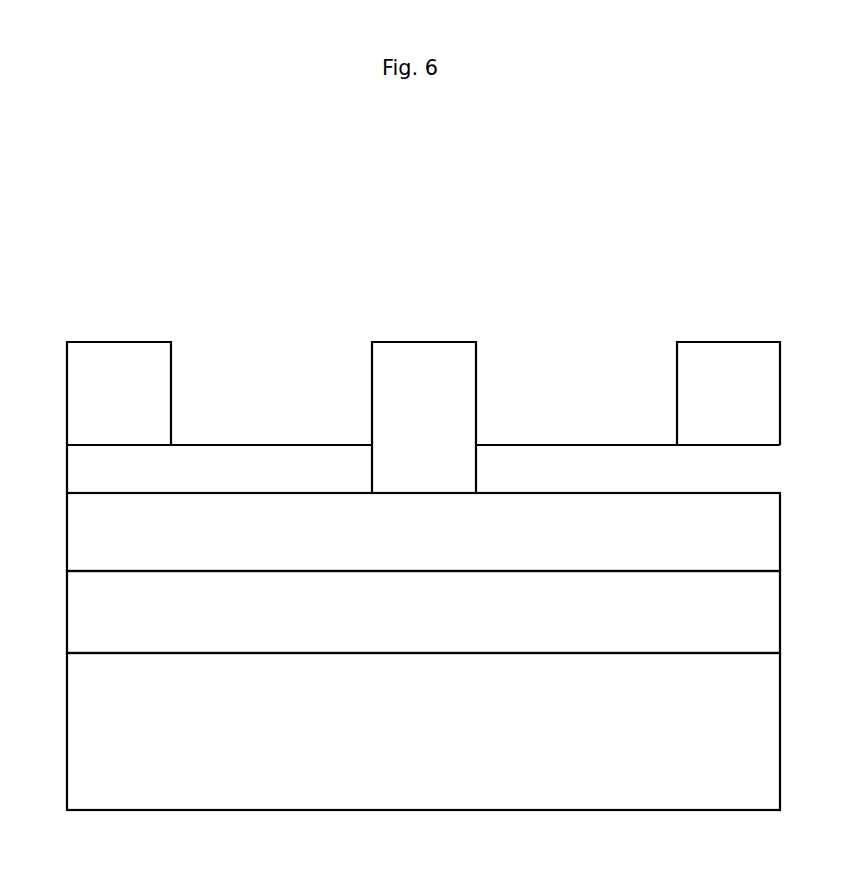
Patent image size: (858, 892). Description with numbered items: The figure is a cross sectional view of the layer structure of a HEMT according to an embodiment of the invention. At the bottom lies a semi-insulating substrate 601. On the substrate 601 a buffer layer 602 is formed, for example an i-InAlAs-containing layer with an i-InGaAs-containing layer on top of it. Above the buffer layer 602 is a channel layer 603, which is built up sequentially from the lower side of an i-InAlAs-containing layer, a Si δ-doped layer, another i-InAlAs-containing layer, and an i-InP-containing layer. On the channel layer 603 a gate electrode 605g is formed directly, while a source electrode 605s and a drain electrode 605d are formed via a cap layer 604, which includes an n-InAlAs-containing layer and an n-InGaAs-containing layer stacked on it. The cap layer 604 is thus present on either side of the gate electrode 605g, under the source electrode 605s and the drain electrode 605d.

The semi-insulating substrate 601 is at (770, 731).
The buffer layer 602 is at (770, 614).
The channel layer 603 is at (770, 536).
The cap layer 604 is at (243, 452).
The source electrode 605s is at (119, 349).
The gate electrode 605g is at (419, 349).
The drain electrode 605d is at (728, 349).